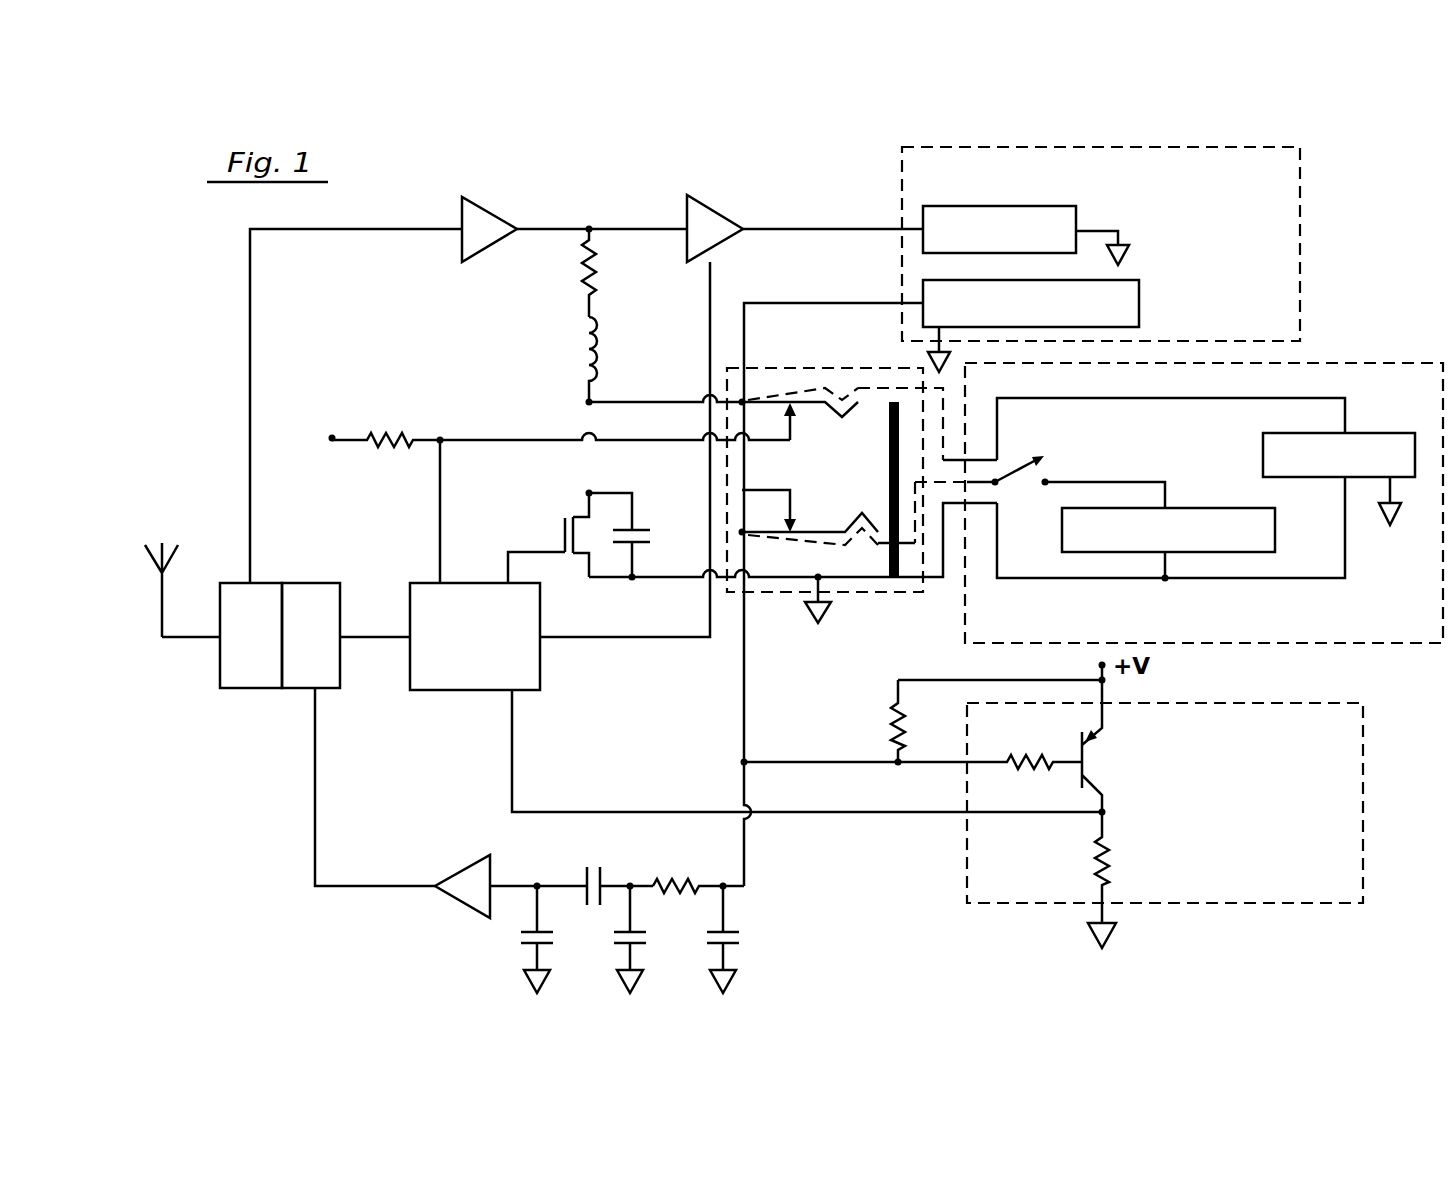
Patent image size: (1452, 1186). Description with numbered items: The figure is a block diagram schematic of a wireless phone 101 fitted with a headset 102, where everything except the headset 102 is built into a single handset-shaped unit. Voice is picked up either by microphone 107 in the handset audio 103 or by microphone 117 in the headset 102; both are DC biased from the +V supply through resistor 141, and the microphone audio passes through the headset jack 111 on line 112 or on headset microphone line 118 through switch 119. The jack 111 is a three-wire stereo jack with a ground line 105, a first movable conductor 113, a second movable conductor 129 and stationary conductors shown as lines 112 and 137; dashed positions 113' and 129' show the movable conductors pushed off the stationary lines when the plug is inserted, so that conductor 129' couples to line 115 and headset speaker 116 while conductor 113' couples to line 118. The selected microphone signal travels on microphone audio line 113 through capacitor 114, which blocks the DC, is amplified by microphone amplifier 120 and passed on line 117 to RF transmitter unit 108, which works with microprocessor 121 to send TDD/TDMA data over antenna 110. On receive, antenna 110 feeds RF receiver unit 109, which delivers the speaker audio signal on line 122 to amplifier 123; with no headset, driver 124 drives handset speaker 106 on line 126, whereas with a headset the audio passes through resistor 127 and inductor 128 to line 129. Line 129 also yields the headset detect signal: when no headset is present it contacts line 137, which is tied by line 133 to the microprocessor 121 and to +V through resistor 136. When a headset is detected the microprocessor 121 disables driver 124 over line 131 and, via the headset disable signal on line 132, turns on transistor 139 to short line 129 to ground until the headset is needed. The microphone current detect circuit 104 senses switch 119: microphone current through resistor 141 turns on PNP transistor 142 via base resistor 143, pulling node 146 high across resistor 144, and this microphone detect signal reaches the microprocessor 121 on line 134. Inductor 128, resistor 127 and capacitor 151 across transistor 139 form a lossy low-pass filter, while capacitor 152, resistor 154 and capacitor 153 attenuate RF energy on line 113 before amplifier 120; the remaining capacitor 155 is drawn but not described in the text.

The wireless phone 101 is at (748, 187).
The headset 102 is at (1118, 624).
The handset audio 103 is at (1243, 320).
The microphone current detect circuit 104 is at (1285, 866).
The ground line 105 is at (862, 592).
The handset speaker 106 is at (1008, 206).
The microphone 107 is at (1139, 303).
The RF transmitter unit 108 is at (305, 583).
The RF receiver unit 109 is at (258, 688).
The antenna 110 is at (165, 590).
The headset jack 111 is at (857, 469).
The line 112 is at (795, 303).
The first movable conductor / microphone audio line 113 is at (809, 644).
The position of first movable conductor 113' is at (813, 550).
The capacitor 114 is at (590, 867).
The line 115 is at (1160, 398).
The headset speaker 116 is at (1395, 433).
The microphone 117 is at (1200, 508).
The headset microphone line 118 is at (1093, 482).
The switch 119 is at (1015, 465).
The microphone amplifier 120 is at (455, 905).
The microprocessor 121 is at (462, 690).
The line 122 is at (250, 400).
The amplifier 123 is at (490, 205).
The driver 124 is at (705, 197).
The line 126 is at (815, 230).
The resistor 127 is at (582, 268).
The inductor 128 is at (583, 350).
The second movable conductor / line 129 is at (722, 380).
The position of second movable conductor 129' is at (803, 363).
The line 131 is at (650, 637).
The line 132 is at (570, 560).
The line 133 is at (440, 513).
The line 134 is at (512, 750).
The resistor 136 is at (385, 437).
The line 137 is at (530, 440).
The transistor 139 is at (565, 525).
The resistor 141 is at (895, 720).
The transistor 142 is at (1095, 765).
The base resistor 143 is at (1035, 760).
The resistor 144 is at (1108, 850).
The node 146 is at (1095, 818).
The capacitor 151 is at (650, 535).
The capacitor 152 is at (650, 940).
The capacitor 153 is at (742, 940).
The resistor 154 is at (690, 880).
The capacitor 155 is at (515, 940).